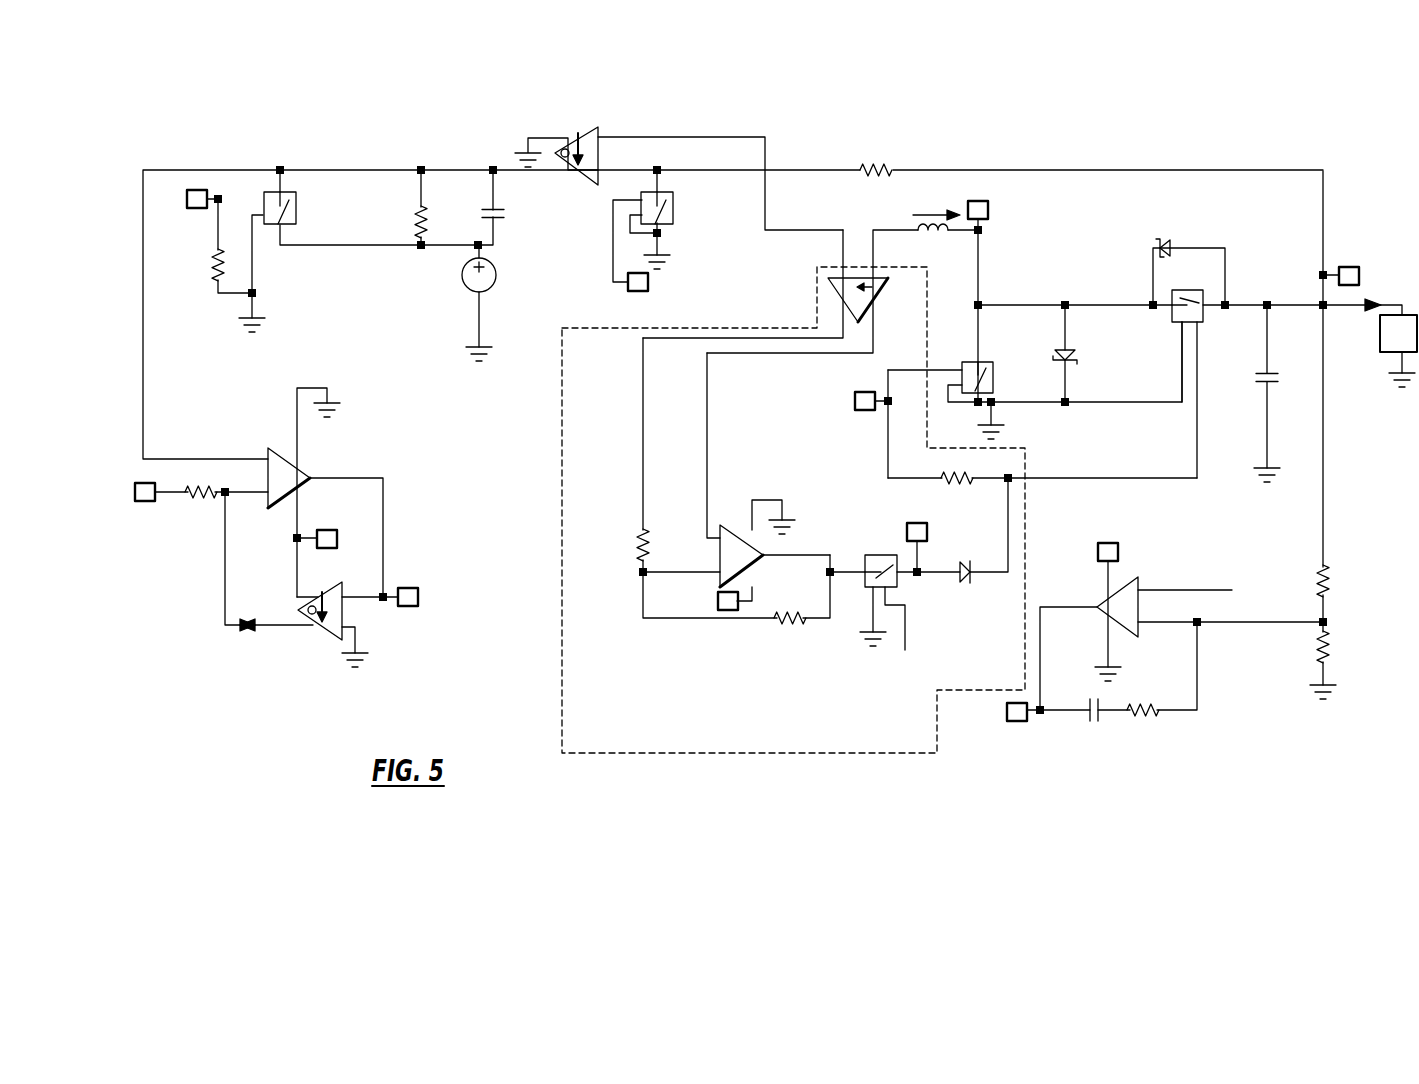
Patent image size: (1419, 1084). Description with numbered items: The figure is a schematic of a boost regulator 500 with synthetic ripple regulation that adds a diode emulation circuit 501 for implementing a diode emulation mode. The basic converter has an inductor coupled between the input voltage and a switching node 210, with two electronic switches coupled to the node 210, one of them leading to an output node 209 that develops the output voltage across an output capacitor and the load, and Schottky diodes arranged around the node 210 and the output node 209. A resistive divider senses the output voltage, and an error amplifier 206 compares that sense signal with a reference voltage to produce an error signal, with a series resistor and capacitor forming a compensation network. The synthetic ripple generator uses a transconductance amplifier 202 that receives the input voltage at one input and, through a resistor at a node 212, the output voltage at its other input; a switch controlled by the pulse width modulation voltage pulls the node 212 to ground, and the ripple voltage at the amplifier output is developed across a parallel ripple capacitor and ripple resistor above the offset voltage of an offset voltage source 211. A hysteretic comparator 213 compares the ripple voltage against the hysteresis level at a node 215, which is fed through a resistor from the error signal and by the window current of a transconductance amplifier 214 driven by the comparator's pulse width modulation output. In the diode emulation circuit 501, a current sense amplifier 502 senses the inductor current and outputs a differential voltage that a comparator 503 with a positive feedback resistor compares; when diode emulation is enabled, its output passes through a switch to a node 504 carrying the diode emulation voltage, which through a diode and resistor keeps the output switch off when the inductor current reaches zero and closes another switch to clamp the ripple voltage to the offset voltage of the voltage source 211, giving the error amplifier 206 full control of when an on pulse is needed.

The transconductance amplifier 202 is at (591, 128).
The error amplifier 206 is at (1122, 630).
The output node 209 is at (1323, 171).
The node 210 is at (982, 304).
The offset voltage source 211 is at (466, 289).
The node 212 is at (661, 168).
The comparator 213 is at (270, 453).
The transconductance amplifier 214 is at (346, 609).
The node 215 is at (229, 495).
The boost regulator 500 is at (1128, 116).
The diode emulation circuit 501 is at (618, 393).
The current sense amplifier 502 is at (878, 298).
The comparator 503 is at (766, 560).
The node 504 is at (920, 570).